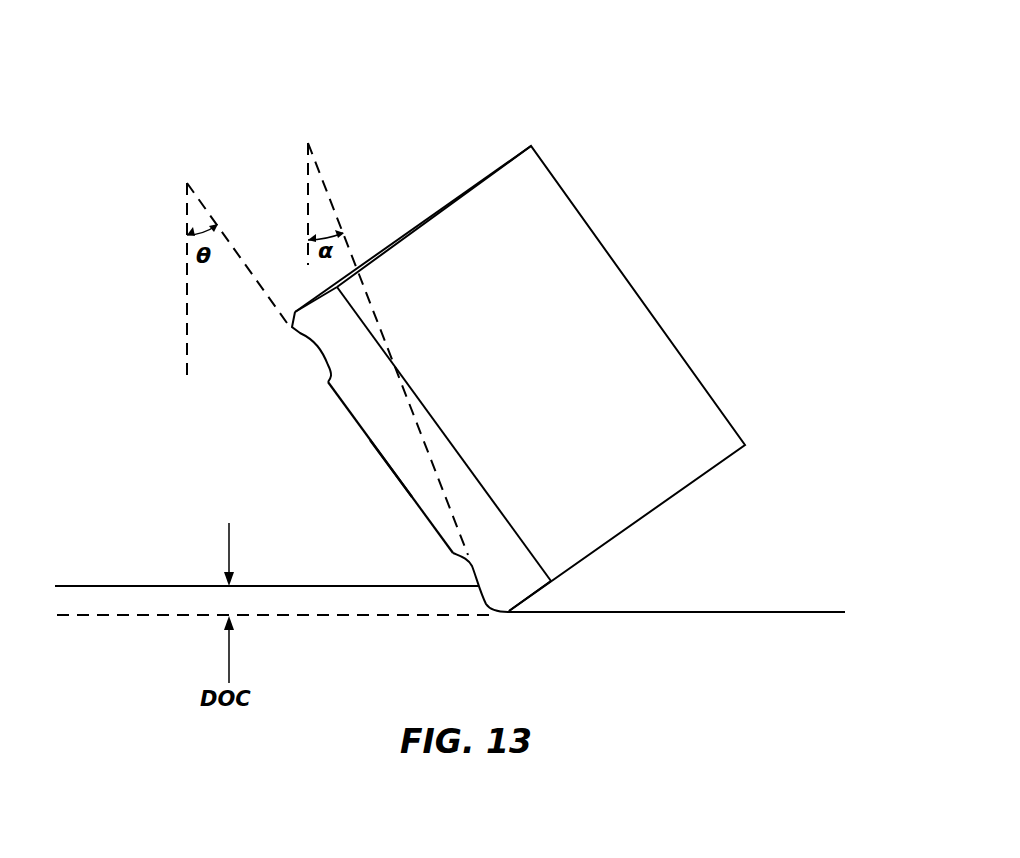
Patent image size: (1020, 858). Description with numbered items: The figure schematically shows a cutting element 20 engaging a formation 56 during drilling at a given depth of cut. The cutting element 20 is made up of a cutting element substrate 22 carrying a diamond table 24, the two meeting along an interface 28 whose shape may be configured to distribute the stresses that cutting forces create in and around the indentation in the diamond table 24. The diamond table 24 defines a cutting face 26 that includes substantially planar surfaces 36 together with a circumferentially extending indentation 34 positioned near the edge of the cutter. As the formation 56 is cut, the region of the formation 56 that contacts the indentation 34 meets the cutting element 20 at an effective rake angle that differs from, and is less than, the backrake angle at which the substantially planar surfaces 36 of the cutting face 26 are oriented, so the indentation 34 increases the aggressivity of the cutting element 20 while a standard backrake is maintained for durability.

The cutting element 20 is at (502, 136).
The cutting element substrate 22 is at (541, 378).
The diamond table 24 is at (423, 449).
The cutting face 26 is at (338, 436).
The interface 28 is at (493, 503).
The indentation 34 is at (317, 363).
The substantially planar surfaces 36 is at (390, 462).
The formation 56 is at (450, 623).